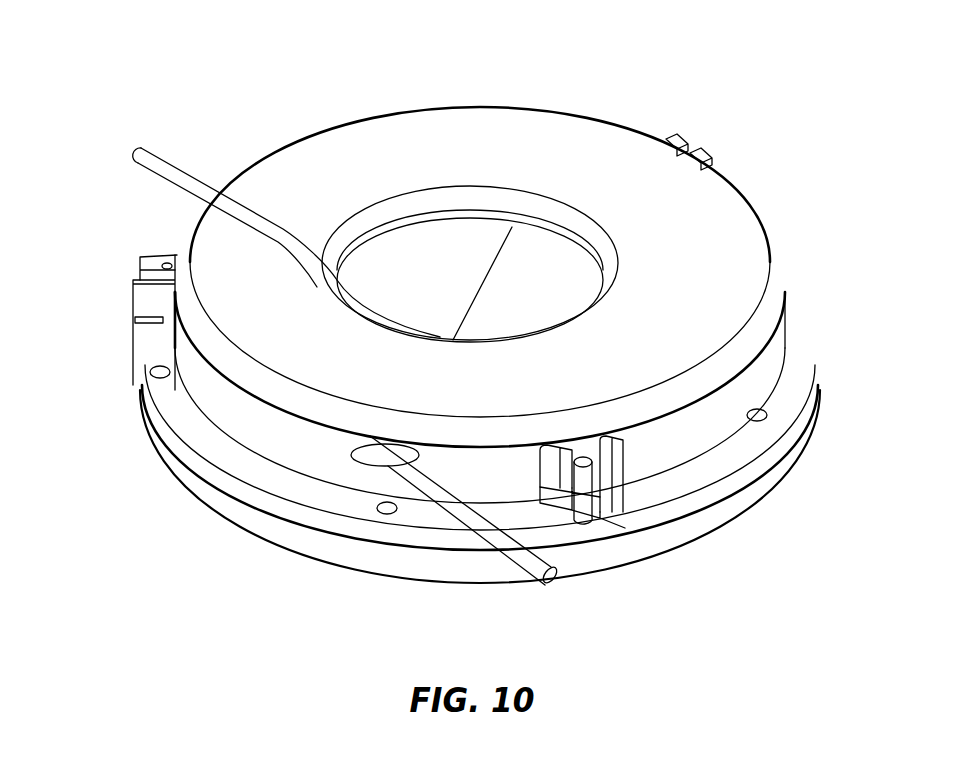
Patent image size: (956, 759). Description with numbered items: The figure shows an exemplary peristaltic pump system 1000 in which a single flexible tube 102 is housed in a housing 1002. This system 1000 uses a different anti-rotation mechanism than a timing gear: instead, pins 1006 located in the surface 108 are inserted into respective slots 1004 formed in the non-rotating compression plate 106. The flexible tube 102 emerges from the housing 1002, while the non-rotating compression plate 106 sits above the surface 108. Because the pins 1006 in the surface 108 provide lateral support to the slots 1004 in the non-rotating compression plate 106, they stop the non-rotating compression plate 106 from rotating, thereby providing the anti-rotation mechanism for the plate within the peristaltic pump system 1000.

The peristaltic pump system 1000 is at (392, 37).
The housing 1002 is at (615, 142).
The flexible tube 102 is at (182, 164).
The slots 1004 is at (133, 297).
The pins 1006 is at (587, 523).
The non-rotating compression plate 106 is at (232, 405).
The surface 108 is at (271, 529).